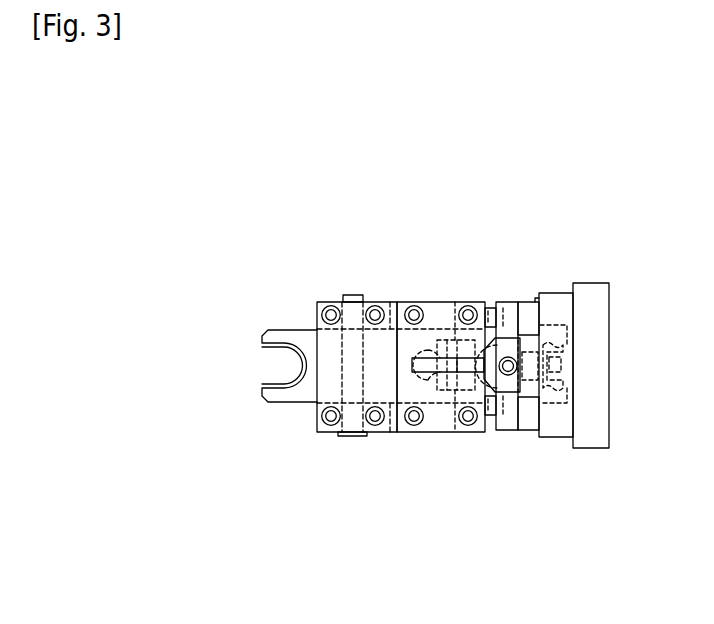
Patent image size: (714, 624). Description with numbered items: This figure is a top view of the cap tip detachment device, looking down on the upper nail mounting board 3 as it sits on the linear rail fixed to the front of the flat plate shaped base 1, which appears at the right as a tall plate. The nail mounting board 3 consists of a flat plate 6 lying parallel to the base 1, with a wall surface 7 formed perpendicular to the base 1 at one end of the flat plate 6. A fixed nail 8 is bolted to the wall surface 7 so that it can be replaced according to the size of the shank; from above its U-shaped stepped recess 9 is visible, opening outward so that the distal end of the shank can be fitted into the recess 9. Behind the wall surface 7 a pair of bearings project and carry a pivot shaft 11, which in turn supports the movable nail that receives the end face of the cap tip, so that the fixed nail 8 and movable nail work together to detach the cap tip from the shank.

The base 1 is at (595, 288).
The nail mounting board 3 is at (443, 432).
The flat plate 6 is at (508, 305).
The wall surface 7 is at (442, 307).
The fixed nail 8 is at (305, 338).
The U-shaped stepped recess 9 is at (280, 383).
The pivot shaft 11 is at (353, 436).